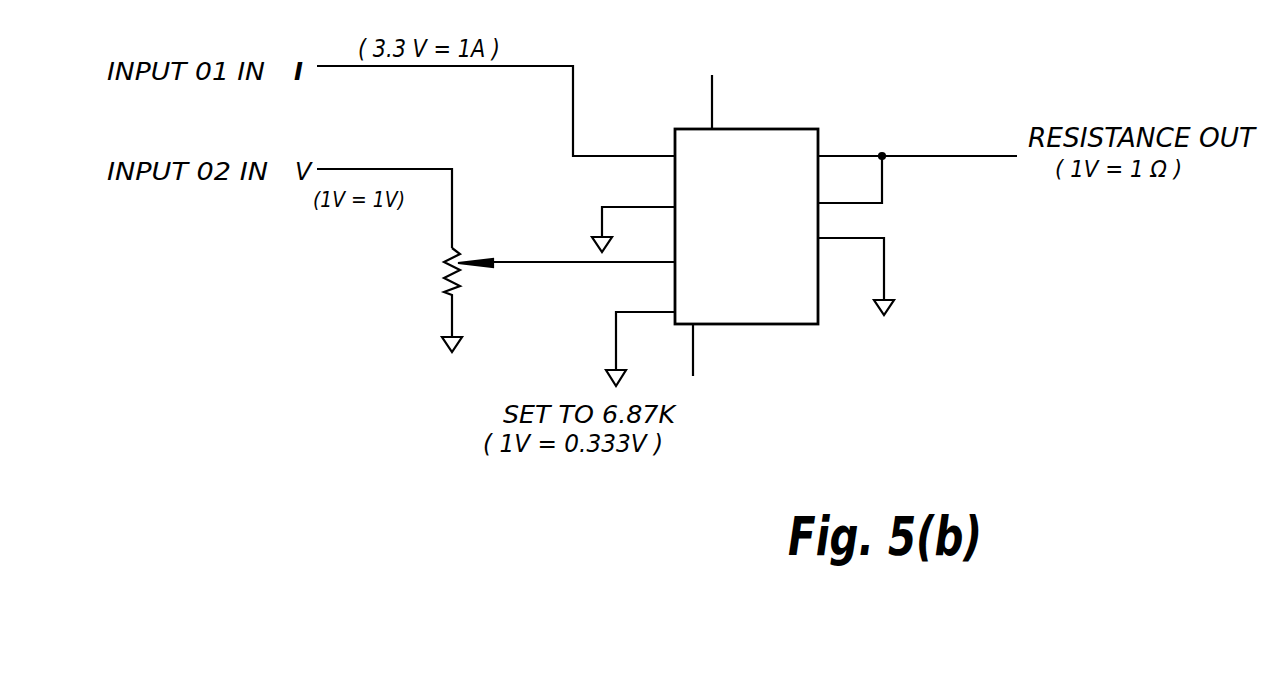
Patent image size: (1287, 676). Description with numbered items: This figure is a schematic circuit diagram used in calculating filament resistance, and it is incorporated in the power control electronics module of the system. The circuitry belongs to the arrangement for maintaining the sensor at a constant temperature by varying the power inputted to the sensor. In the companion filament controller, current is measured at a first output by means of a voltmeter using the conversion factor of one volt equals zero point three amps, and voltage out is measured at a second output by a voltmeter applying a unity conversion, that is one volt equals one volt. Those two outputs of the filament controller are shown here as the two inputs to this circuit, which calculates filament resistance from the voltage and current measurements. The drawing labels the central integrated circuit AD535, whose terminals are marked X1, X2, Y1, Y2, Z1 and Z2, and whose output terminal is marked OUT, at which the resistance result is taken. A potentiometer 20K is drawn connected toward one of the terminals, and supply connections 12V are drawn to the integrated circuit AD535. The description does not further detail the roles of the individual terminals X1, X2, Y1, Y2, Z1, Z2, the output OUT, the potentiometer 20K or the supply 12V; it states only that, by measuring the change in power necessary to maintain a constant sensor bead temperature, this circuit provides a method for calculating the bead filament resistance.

The X1 input pin (current input) X1 is at (496, 111).
The X2 input pin (grounded) X2 is at (633, 214).
The Z1 input pin (potentiometer wiper) Z1 is at (582, 245).
The Z2 input pin (grounded) Z2 is at (640, 333).
The Y1 input pin (grounded) Y1 is at (856, 261).
The Y2 input pin (tied to output) Y2 is at (850, 179).
The multiplier output (resistance out) OUT is at (917, 142).
The analog multiplier/divider IC AD535 is at (746, 226).
The 20K potentiometer 20K is at (430, 300).
The +12V / -12V supply connections 12V is at (703, 223).